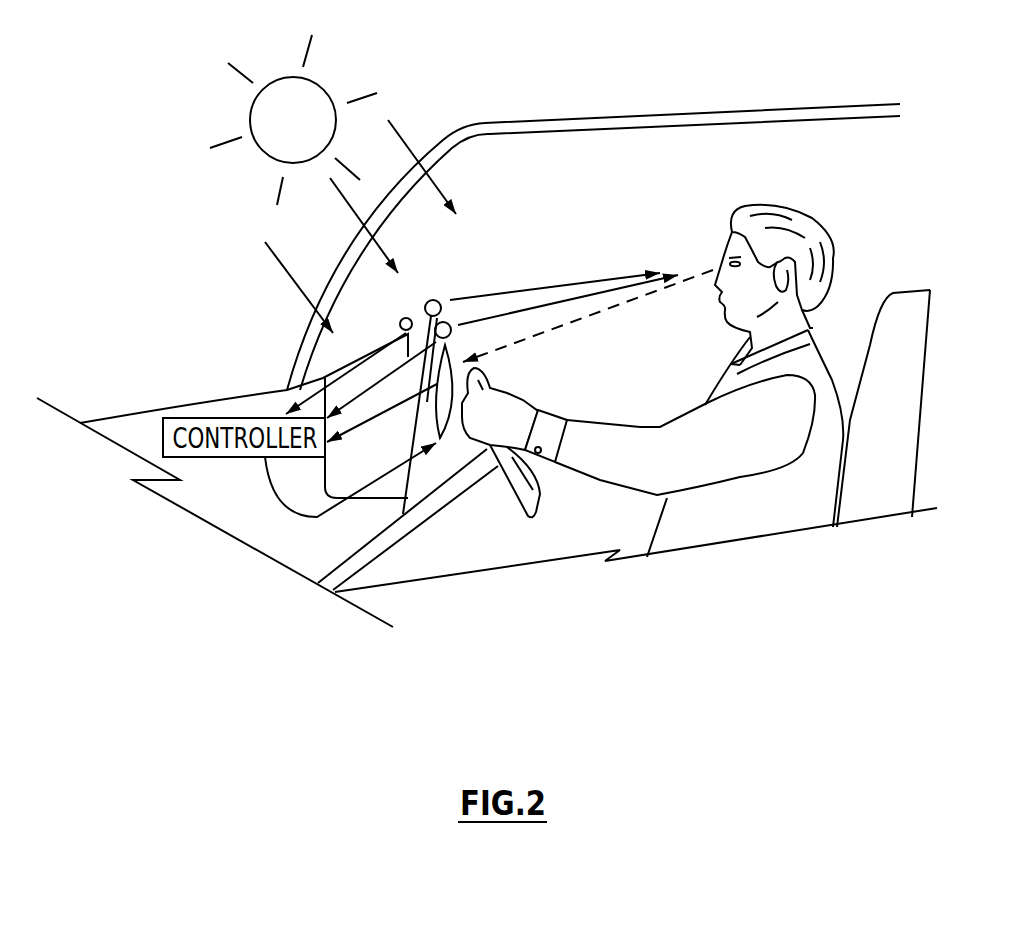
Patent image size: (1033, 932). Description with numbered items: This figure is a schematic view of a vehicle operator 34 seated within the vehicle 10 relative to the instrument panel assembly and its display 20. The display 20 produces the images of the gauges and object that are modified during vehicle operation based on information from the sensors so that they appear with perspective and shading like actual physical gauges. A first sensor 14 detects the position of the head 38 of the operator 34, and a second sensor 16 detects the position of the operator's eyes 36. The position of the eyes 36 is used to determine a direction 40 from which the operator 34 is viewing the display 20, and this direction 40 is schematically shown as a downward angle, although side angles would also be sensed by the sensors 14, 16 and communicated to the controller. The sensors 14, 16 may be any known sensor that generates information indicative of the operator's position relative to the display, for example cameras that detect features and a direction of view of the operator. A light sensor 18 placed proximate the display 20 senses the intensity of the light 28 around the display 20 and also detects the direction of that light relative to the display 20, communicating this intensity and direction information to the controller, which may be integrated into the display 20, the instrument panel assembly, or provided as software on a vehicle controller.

The vehicle 10 is at (200, 368).
The first sensor 14 is at (457, 320).
The second sensor 16 is at (442, 295).
The light sensor 18 is at (405, 318).
The display 20 is at (457, 437).
The light 28 is at (268, 283).
The vehicle operator 34 is at (768, 422).
The operator's eyes 36 is at (719, 259).
The head 38 is at (808, 308).
The direction 40 is at (608, 318).